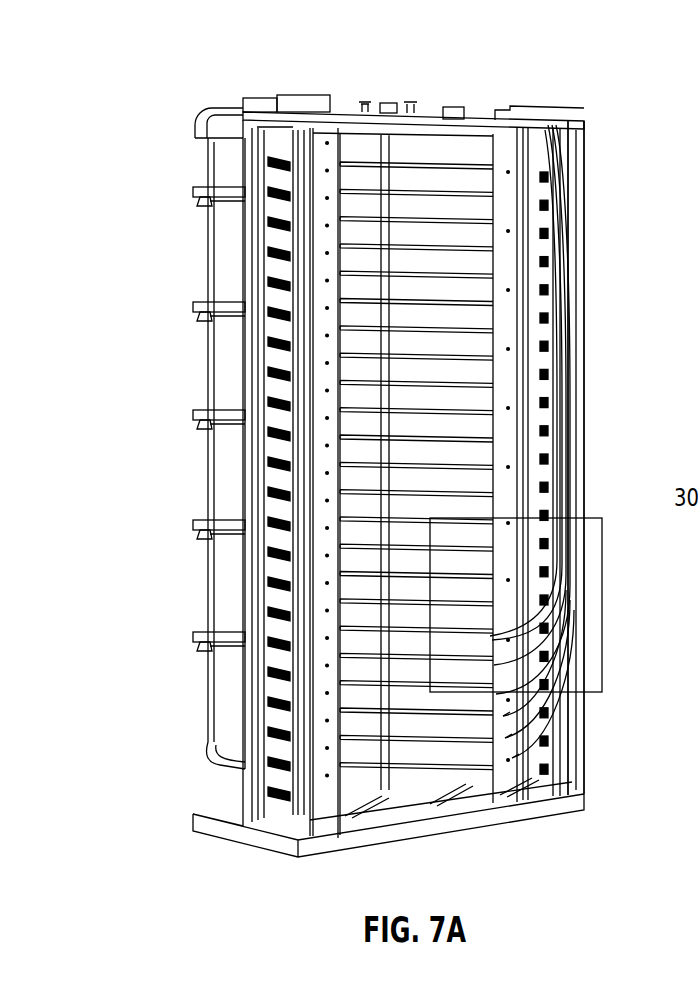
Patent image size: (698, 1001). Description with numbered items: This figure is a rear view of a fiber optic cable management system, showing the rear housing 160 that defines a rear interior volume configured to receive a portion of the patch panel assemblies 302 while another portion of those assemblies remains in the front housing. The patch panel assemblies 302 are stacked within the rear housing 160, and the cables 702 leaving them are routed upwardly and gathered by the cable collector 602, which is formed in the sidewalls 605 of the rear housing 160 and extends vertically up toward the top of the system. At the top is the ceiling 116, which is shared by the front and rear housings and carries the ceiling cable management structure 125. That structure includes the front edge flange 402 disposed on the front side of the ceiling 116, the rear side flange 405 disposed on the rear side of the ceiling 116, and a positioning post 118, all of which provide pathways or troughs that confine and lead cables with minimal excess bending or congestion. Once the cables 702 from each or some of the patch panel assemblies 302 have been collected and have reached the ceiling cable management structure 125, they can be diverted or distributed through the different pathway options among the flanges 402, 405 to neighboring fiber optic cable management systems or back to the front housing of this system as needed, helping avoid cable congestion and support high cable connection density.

The ceiling cable management structure 125 is at (332, 76).
The front edge flange 402 is at (231, 106).
The positioning post 118 is at (360, 108).
The rear side flange 405 is at (448, 106).
The ceiling 116 is at (498, 105).
The rear housing 160 is at (580, 124).
The patch panel assemblies 302 is at (352, 421).
The cable collector 602 is at (563, 549).
The sidewalls 605 is at (568, 713).
The cables 702 is at (517, 722).